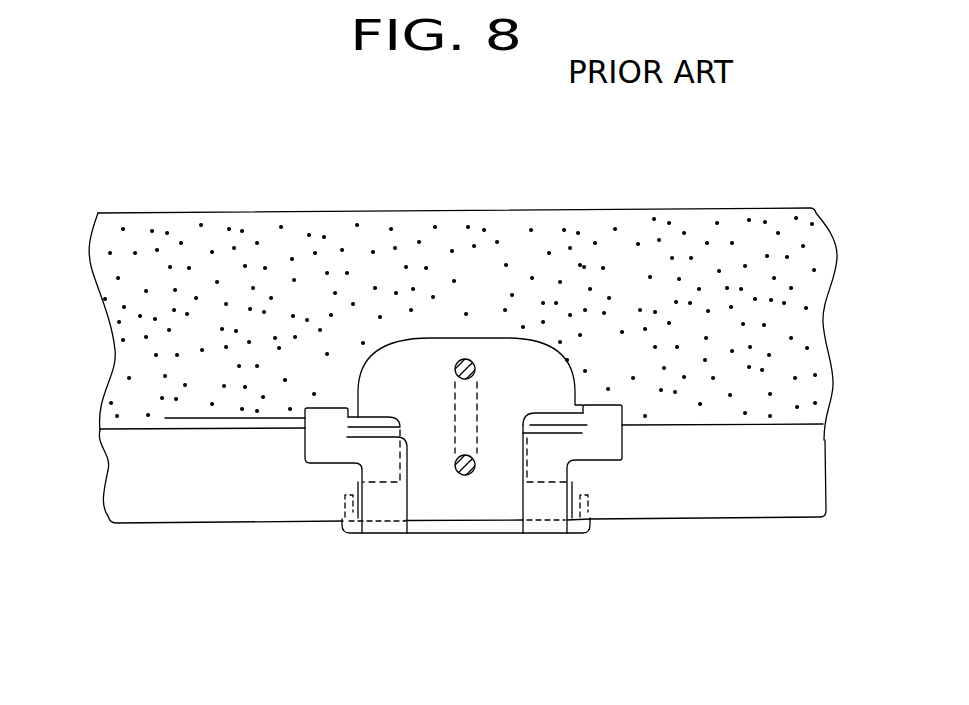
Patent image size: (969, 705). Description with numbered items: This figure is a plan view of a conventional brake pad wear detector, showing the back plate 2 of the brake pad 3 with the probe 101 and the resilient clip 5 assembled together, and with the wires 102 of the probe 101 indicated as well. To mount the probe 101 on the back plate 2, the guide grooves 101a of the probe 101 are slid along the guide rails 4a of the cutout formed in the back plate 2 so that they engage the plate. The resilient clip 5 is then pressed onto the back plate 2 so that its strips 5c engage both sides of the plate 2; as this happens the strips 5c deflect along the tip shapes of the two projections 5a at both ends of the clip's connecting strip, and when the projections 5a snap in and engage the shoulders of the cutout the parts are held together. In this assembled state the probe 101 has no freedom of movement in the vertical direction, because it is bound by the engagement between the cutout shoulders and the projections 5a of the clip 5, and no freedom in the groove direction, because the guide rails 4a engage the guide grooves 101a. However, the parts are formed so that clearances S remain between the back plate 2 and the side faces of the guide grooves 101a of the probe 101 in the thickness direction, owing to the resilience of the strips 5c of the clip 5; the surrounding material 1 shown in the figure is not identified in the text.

The upper layer (cover/body) 1 is at (753, 238).
The back plate 2 is at (157, 500).
The brake pad 3 is at (97, 428).
The clearances S is at (200, 460).
The resilient clip 5 is at (332, 404).
The projections 5a is at (343, 503).
The strips 5c is at (598, 432).
The guide rails 4a is at (522, 458).
The probe 101 is at (503, 372).
The guide grooves 101a is at (372, 438).
The terminal pins 102 is at (457, 362).